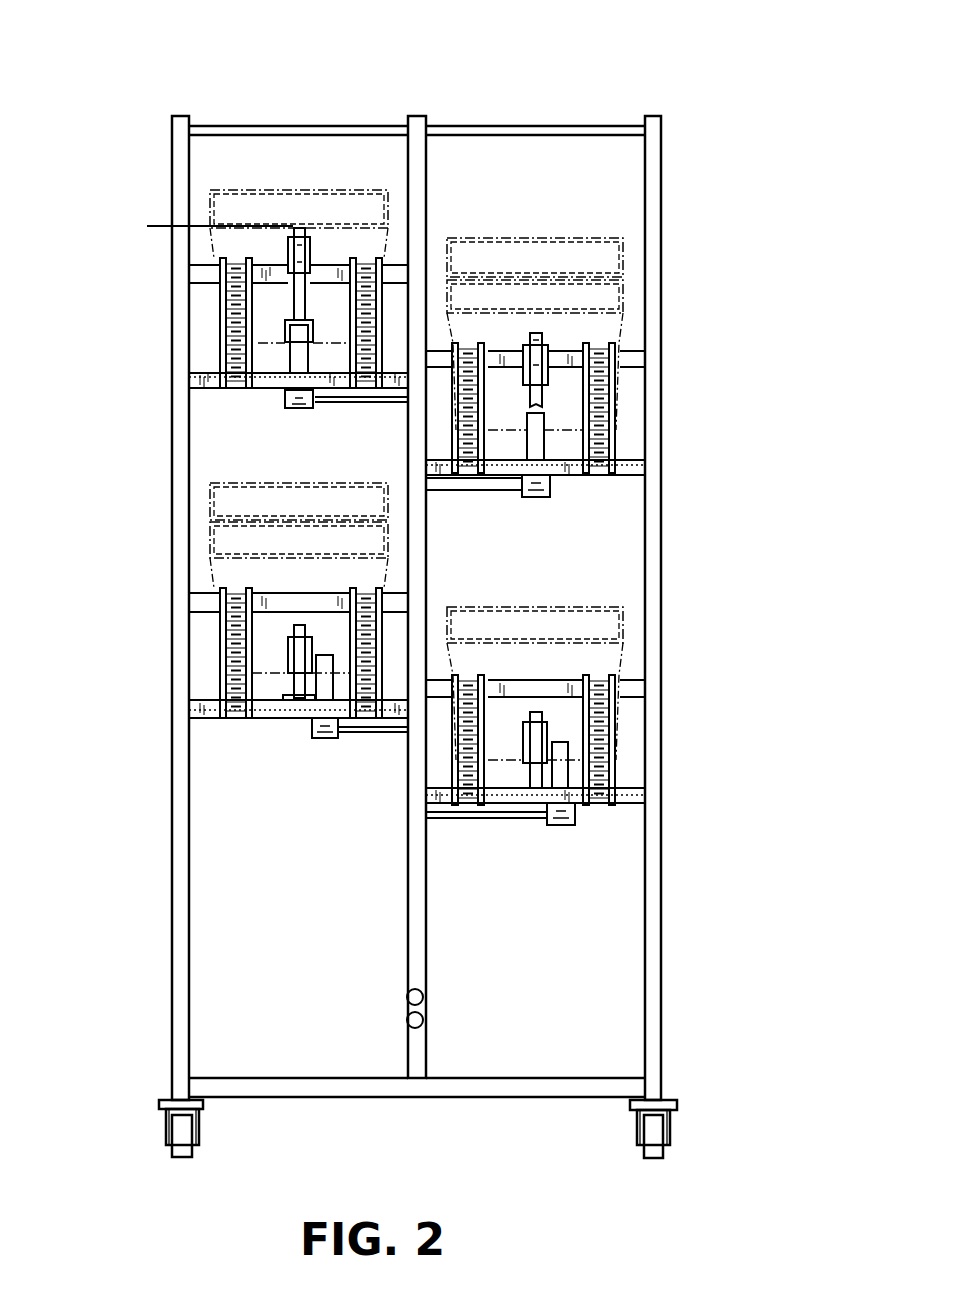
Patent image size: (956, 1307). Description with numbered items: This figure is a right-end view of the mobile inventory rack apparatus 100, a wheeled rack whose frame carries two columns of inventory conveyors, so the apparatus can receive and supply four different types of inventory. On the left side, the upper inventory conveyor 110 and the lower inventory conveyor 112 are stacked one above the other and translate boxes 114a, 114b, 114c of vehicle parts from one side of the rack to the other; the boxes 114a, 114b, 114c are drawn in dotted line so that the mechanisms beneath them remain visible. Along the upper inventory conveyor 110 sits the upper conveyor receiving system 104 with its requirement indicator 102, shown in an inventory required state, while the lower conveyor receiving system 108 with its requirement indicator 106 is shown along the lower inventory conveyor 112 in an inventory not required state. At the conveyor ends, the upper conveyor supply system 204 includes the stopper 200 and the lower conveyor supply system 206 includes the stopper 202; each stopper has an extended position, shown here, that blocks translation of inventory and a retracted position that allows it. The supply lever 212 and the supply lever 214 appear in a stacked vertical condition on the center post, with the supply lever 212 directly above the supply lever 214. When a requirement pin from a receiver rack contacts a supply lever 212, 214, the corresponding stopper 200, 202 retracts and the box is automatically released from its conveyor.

The mobile inventory rack apparatus 100 is at (472, 98).
The requirement indicator 102 is at (292, 312).
The upper conveyor receiving system 104 is at (280, 298).
The requirement indicator 106 is at (283, 688).
The lower conveyor receiving system 108 is at (280, 680).
The upper inventory conveyor 110 is at (222, 272).
The lower inventory conveyor 112 is at (222, 600).
The box 114a is at (258, 190).
The box 114b is at (223, 483).
The box 114c is at (223, 555).
The stopper 200 is at (302, 352).
The stopper 202 is at (328, 656).
The upper conveyor supply system 204 is at (285, 412).
The lower conveyor supply system 206 is at (350, 752).
The supply lever 212 is at (410, 995).
The supply lever 214 is at (430, 1018).